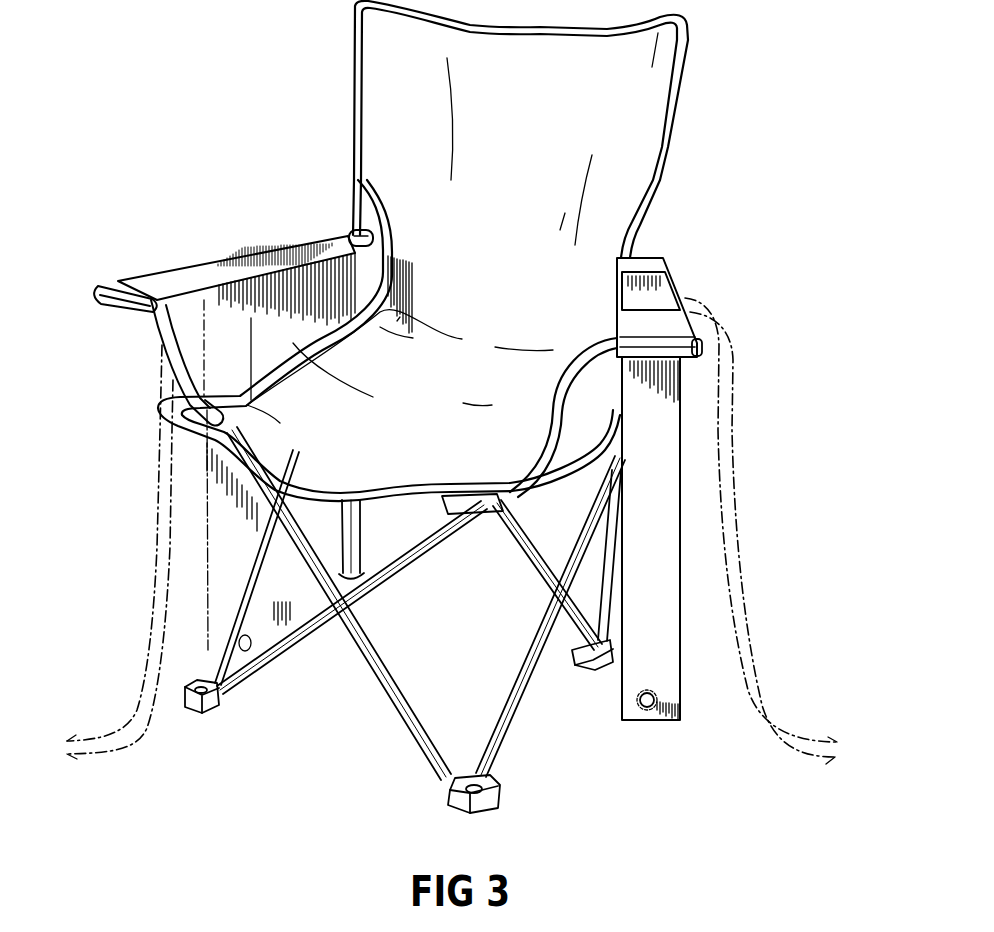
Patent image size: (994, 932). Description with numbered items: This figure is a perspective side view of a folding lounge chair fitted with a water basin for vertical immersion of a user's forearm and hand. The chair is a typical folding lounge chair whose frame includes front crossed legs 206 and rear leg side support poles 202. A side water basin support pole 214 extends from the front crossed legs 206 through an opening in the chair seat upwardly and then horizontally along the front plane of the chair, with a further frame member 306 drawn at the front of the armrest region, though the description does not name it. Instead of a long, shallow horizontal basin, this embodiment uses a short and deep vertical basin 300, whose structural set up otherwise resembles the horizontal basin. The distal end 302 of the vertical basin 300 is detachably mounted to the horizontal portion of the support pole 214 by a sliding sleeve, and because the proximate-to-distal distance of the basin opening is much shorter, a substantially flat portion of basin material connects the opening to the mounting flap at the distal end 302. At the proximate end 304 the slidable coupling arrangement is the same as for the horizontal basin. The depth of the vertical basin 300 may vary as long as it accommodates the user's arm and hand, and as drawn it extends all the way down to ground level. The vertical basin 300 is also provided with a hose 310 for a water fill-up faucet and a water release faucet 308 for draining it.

The rear leg side support pole 202 is at (353, 236).
The front crossed legs 206 is at (400, 525).
The water basin support pole 214 is at (697, 344).
The vertical basin 300 is at (247, 255).
The distal end 302 is at (118, 280).
The proximate end 304 is at (655, 262).
The front support tube 306 is at (348, 233).
The water release faucet 308 is at (645, 706).
The hose 310 is at (737, 572).